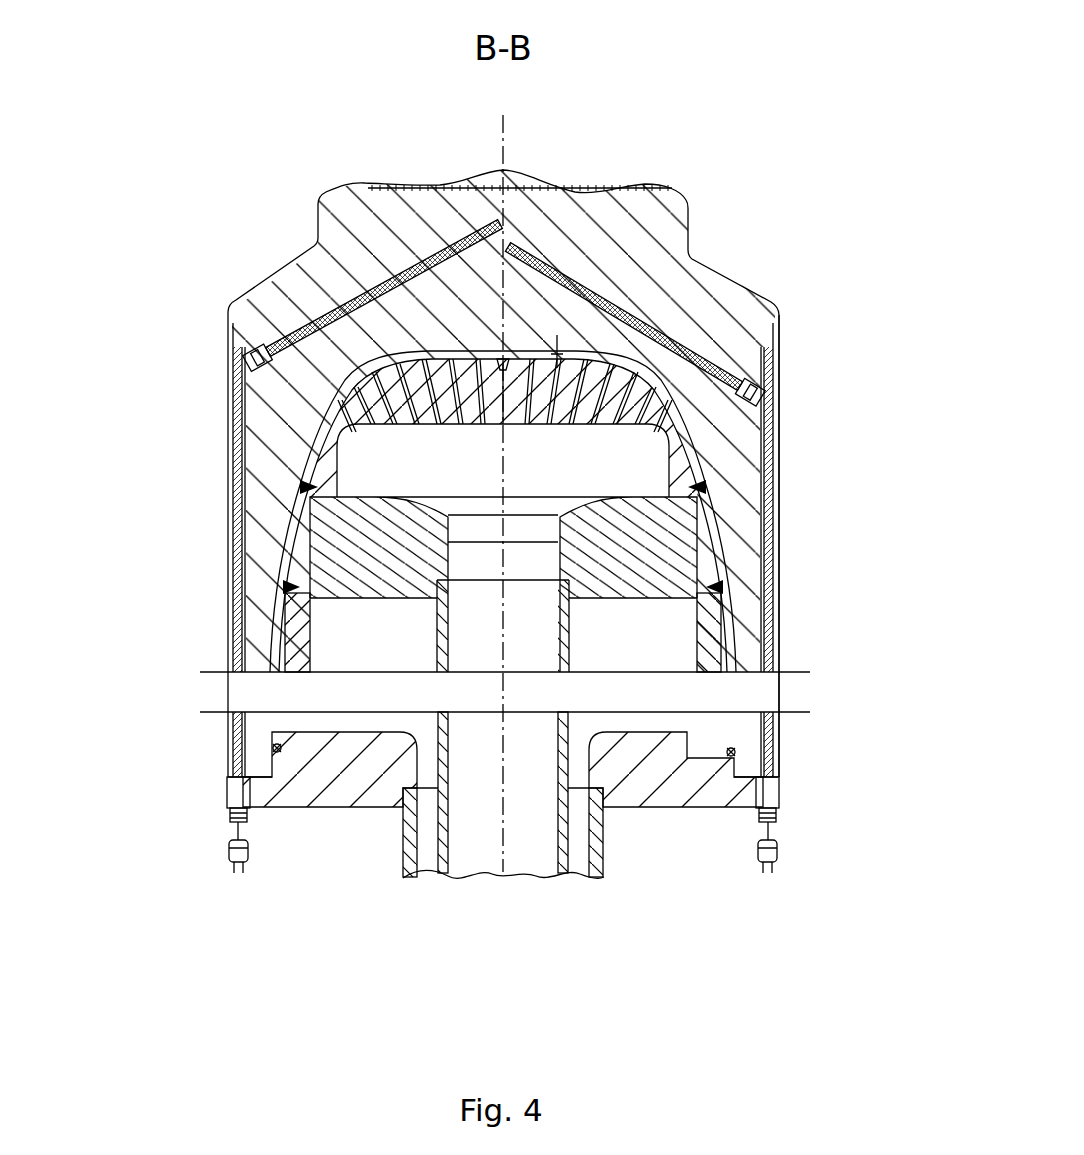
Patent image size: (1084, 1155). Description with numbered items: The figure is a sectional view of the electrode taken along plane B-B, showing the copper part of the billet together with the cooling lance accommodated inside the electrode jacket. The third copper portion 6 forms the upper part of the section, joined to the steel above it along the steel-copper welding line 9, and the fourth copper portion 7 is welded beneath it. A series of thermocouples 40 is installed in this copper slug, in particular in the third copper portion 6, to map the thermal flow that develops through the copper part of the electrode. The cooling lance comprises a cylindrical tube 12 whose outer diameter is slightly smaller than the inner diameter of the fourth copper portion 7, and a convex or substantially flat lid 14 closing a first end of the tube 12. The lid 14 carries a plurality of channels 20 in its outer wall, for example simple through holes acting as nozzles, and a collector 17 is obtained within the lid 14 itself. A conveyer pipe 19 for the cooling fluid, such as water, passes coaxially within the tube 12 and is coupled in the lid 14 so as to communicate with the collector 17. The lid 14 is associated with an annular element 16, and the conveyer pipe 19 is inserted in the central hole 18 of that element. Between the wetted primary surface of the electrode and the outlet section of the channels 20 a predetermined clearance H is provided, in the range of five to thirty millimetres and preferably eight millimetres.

The third copper portion 6 is at (270, 297).
The steel-copper welding line 9 is at (453, 183).
The clearance distance H is at (557, 345).
The thermocouples 40 is at (350, 298).
The channels 20 is at (363, 413).
The collector 17 is at (373, 467).
The central hole 18 is at (473, 528).
The cylindrical tube 12 is at (292, 645).
The annular element 16 is at (687, 557).
The lid 14 is at (772, 517).
The fourth copper portion 7 is at (272, 748).
The conveyer pipe 19 is at (477, 870).